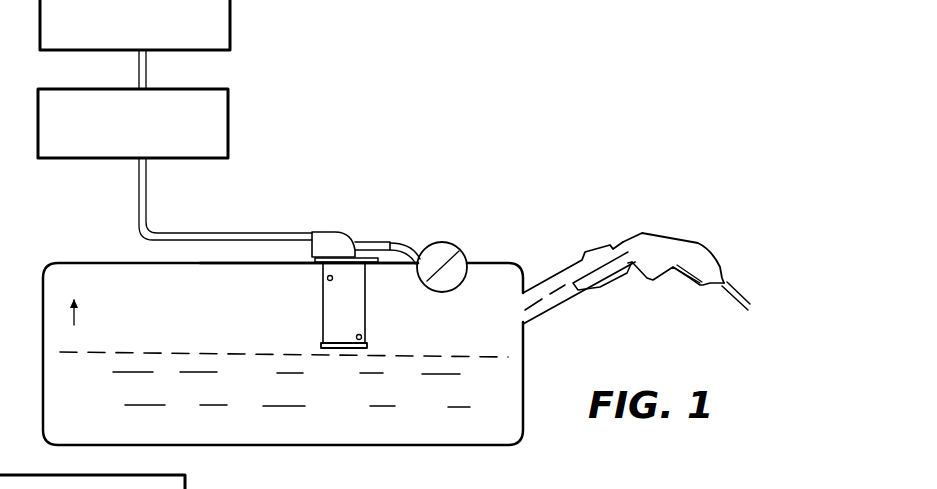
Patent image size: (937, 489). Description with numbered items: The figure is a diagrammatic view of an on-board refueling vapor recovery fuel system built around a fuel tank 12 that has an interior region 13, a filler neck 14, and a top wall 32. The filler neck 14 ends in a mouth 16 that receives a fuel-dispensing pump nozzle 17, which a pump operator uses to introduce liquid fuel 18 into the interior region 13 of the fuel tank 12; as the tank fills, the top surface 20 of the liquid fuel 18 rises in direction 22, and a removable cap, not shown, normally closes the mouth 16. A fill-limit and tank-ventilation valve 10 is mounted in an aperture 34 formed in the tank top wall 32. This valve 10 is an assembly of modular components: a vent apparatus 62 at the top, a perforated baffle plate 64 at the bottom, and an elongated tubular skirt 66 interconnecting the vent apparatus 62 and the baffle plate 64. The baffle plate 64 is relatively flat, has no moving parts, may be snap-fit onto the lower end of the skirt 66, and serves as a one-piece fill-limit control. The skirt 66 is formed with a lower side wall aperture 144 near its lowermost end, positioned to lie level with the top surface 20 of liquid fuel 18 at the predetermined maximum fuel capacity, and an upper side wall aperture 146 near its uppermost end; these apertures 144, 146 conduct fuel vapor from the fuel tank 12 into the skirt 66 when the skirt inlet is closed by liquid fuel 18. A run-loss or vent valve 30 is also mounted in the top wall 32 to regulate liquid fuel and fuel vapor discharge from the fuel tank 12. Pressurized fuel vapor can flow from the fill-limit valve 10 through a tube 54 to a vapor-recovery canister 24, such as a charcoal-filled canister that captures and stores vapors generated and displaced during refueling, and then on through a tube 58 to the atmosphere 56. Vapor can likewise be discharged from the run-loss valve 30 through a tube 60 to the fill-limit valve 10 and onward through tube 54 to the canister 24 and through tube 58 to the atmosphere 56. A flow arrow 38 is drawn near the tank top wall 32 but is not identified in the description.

The fill-limit and tank-ventilation valve 10 is at (340, 220).
The fuel tank 12 is at (544, 433).
The interior region 13 is at (96, 341).
The filler neck 14 is at (562, 324).
The mouth 16 is at (634, 240).
The fuel-dispensing pump nozzle 17 is at (672, 230).
The liquid fuel 18 is at (320, 435).
The top surface 20 is at (155, 352).
The direction 22 is at (75, 320).
The vapor-recovery canister 24 is at (218, 127).
The run-loss or vent valve 30 is at (460, 252).
The top wall 32 is at (105, 260).
The aperture 34 is at (318, 265).
The vapor flow arrow 38 is at (83, 281).
The tube 54 is at (233, 233).
The atmosphere 56 is at (218, 37).
The tube 58 is at (146, 69).
The tube 60 is at (404, 240).
The vent apparatus 62 is at (343, 235).
The perforated baffle plate 64 is at (342, 350).
The elongated tubular skirt 66 is at (322, 322).
The lower side wall aperture 144 is at (362, 337).
The upper side wall aperture 146 is at (327, 288).